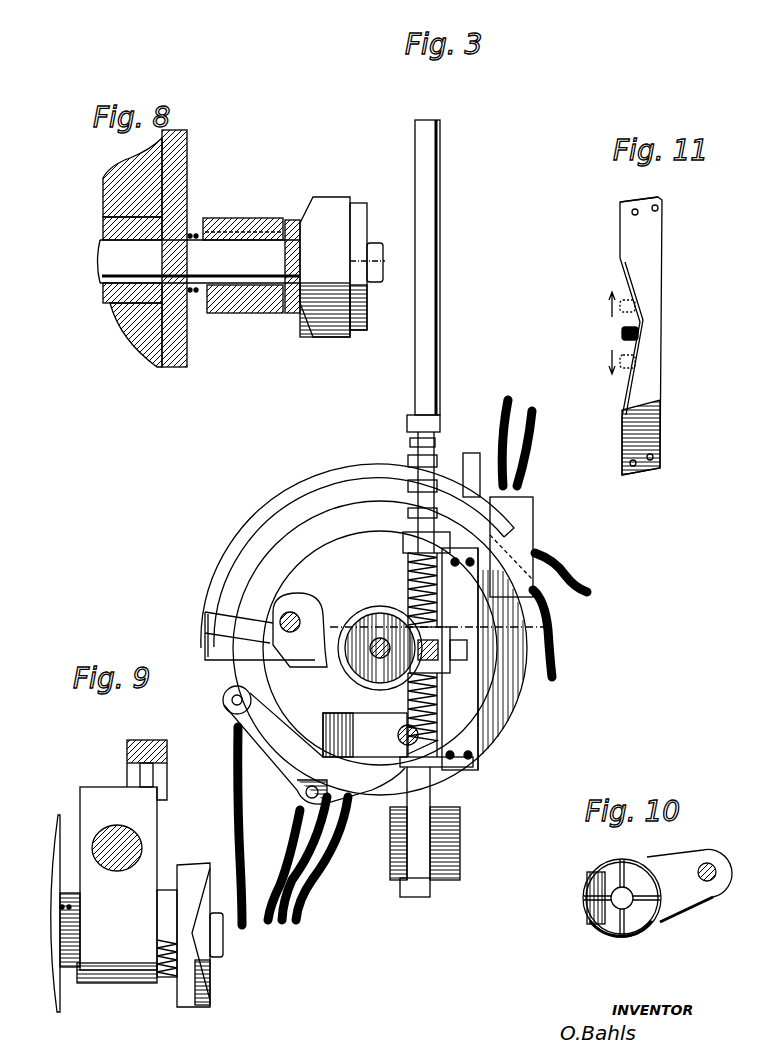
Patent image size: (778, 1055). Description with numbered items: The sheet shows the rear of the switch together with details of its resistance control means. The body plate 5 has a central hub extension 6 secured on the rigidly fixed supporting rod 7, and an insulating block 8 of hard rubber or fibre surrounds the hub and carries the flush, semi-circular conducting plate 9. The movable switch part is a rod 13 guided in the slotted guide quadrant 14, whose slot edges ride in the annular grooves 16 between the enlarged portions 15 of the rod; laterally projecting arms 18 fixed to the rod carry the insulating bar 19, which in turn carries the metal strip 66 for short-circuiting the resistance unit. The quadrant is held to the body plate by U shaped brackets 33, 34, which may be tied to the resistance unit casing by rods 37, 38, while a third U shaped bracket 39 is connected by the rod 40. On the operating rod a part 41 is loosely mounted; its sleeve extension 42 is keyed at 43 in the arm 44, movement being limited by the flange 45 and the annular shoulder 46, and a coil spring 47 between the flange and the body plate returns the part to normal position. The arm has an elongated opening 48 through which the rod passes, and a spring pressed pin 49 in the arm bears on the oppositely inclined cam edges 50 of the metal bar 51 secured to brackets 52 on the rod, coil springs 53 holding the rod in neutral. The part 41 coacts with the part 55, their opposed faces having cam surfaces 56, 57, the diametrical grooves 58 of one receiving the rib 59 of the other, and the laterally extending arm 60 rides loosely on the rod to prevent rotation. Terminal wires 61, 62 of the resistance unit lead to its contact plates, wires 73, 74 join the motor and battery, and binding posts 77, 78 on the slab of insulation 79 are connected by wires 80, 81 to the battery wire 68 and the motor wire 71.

In FIG. 8, the body plate 5 is at (188, 173).
In FIG. 9, the body plate 5 is at (52, 876).
In FIG. 8, the hub extension 6 is at (120, 284).
In FIG. 8, the supporting rod 7 is at (115, 257).
In FIG. 3, the supporting rod 7 is at (342, 667).
In FIG. 9, the supporting rod 7 is at (66, 936).
In FIG. 8, the insulating block 8 is at (153, 338).
In FIG. 3, the insulating block 8 is at (487, 753).
In FIG. 3, the conducting plate 9 is at (383, 600).
In FIG. 3, the rod 13 is at (437, 285).
In FIG. 9, the rod 13 is at (132, 850).
In FIG. 3, the guide quadrant 14 is at (318, 473).
In FIG. 3, the enlarged portions 15 is at (433, 462).
In FIG. 3, the annular grooves 16 is at (405, 462).
In FIG. 3, the arms 18 is at (410, 424).
In FIG. 3, the insulating bar 19 is at (435, 445).
In FIG. 3, the U shaped bracket 33 is at (270, 640).
In FIG. 3, the U shaped bracket 34 is at (513, 543).
In FIG. 3, the rod 37 is at (292, 618).
In FIG. 10, the rod 37 is at (717, 858).
In FIG. 3, the rod 38 is at (535, 510).
In FIG. 3, the U shaped bracket 39 is at (327, 703).
In FIG. 3, the rod 40 is at (400, 740).
In FIG. 8, the part 41 is at (320, 207).
In FIG. 3, the part 41 is at (366, 578).
In FIG. 9, the part 41 is at (197, 870).
In FIG. 8, the sleeve extension 42 is at (267, 288).
In FIG. 9, the sleeve extension 42 is at (163, 978).
In FIG. 8, the key 43 is at (243, 232).
In FIG. 8, the arm 44 is at (230, 308).
In FIG. 3, the arm 44 is at (530, 628).
In FIG. 9, the arm 44 is at (130, 975).
In FIG. 8, the flange 45 is at (203, 300).
In FIG. 9, the flange 45 is at (75, 940).
In FIG. 8, the annular shoulder 46 is at (290, 304).
In FIG. 9, the annular shoulder 46 is at (179, 982).
In FIG. 8, the coil spring 47 is at (197, 236).
In FIG. 9, the coil spring 47 is at (60, 908).
In FIG. 3, the opening 48 is at (507, 687).
In FIG. 9, the opening 48 is at (105, 800).
In FIG. 3, the spring pressed pin 49 is at (493, 727).
In FIG. 9, the spring pressed pin 49 is at (146, 770).
In FIG. 11, the spring pressed pin 49 is at (620, 305).
In FIG. 3, the cam edges 50 is at (543, 617).
In FIG. 9, the cam edges 50 is at (160, 765).
In FIG. 11, the cam edges 50 is at (645, 322).
In FIG. 3, the metal bar 51 is at (510, 705).
In FIG. 9, the metal bar 51 is at (135, 741).
In FIG. 11, the metal bar 51 is at (648, 440).
In FIG. 3, the brackets 52 is at (403, 523).
In FIG. 3, the coil springs 53 is at (403, 556).
In FIG. 8, the part 55 is at (335, 323).
In FIG. 10, the part 55 is at (600, 872).
In FIG. 8, the cam surface 56 is at (320, 323).
In FIG. 3, the cam surface 56 is at (357, 687).
In FIG. 9, the cam surface 56 is at (205, 985).
In FIG. 8, the cam surface 57 is at (327, 223).
In FIG. 10, the cam surface 57 is at (628, 936).
In FIG. 8, the grooves 58 is at (337, 267).
In FIG. 10, the grooves 58 is at (623, 862).
In FIG. 8, the rib 59 is at (360, 290).
In FIG. 3, the rib 59 is at (377, 645).
In FIG. 9, the rib 59 is at (214, 870).
In FIG. 3, the arm 60 is at (267, 620).
In FIG. 10, the arm 60 is at (685, 860).
In FIG. 3, the terminal wire 61 is at (589, 594).
In FIG. 3, the terminal wire 62 is at (558, 666).
In FIG. 3, the metal strip 66 is at (470, 456).
In FIG. 3, the wire 68 is at (310, 877).
In FIG. 3, the wire 71 is at (303, 893).
In FIG. 3, the wire 73 is at (513, 412).
In FIG. 3, the wire 74 is at (535, 430).
In FIG. 3, the binding post 77 is at (233, 707).
In FIG. 3, the binding post 78 is at (298, 810).
In FIG. 3, the slab of insulation 79 is at (300, 788).
In FIG. 3, the wire 80 is at (233, 777).
In FIG. 3, the wire 81 is at (287, 832).